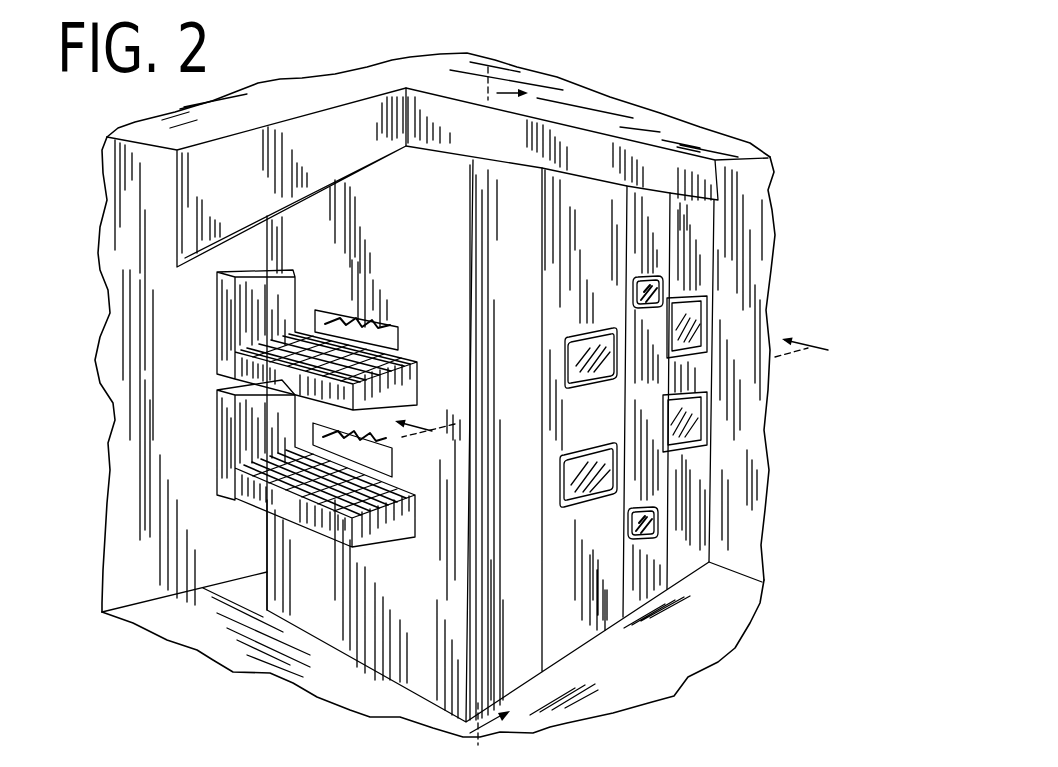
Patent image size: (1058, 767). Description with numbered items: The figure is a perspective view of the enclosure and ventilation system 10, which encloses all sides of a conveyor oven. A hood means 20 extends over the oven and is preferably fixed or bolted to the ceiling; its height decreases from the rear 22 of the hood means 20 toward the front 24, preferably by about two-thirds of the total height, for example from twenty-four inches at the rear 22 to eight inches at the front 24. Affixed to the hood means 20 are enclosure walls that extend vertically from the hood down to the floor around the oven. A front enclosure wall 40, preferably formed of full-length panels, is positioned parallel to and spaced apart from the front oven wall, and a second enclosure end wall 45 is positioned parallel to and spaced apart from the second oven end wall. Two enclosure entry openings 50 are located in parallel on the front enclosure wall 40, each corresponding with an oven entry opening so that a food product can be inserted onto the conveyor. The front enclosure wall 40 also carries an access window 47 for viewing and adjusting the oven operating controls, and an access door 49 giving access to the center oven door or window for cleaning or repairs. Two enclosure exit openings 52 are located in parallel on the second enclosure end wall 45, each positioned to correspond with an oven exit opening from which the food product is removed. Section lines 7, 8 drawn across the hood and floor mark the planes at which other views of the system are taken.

The enclosure and ventilation system 10 is at (773, 203).
The hood means 20 is at (538, 120).
The rear of the hood means 22 is at (172, 195).
The front of the hood means 24 is at (652, 166).
The front enclosure wall 40 is at (693, 497).
The second enclosure end wall 45 is at (403, 620).
The access window 47 is at (692, 583).
The access door 49 is at (595, 373).
The enclosure entry opening 50 is at (788, 405).
The enclosure exit opening 52 is at (305, 458).
The section line 7- 7 is at (619, 387).
The section line 8- 8 is at (494, 406).